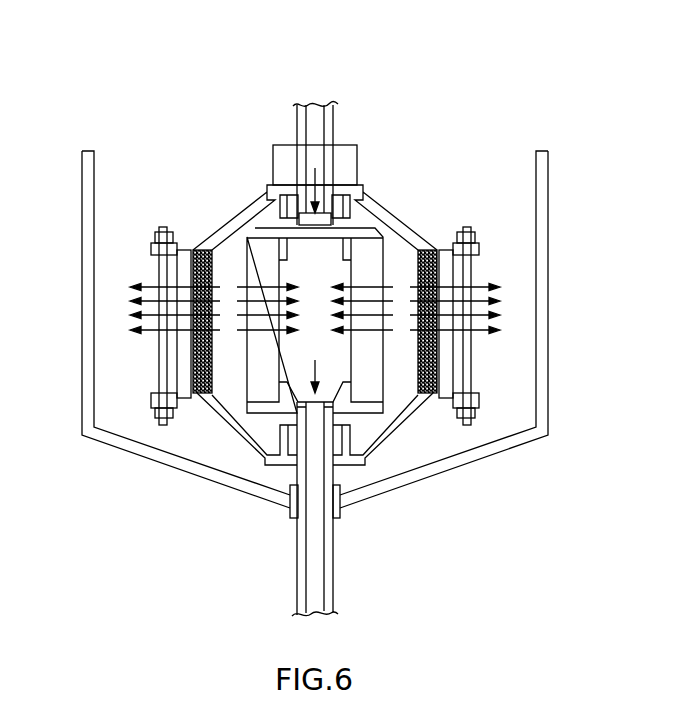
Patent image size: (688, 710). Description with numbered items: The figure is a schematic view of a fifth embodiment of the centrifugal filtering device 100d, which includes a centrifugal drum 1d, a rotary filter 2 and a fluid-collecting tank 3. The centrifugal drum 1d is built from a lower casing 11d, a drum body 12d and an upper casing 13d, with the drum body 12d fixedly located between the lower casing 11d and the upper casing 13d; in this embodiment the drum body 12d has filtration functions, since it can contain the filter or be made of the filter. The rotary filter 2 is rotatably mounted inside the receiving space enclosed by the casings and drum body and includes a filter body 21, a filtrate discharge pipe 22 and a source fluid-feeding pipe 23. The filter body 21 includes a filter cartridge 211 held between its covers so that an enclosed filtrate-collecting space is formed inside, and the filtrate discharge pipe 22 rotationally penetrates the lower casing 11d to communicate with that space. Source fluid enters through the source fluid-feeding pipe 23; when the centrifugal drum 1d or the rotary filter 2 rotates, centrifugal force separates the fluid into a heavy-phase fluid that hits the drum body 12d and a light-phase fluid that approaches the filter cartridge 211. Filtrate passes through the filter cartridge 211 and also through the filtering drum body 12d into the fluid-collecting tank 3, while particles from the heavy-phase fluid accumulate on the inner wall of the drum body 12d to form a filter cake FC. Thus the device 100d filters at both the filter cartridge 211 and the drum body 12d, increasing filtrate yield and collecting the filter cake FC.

The centrifugal filtering device 100d is at (168, 95).
The rotary filter 2 is at (352, 118).
The source fluid-feeding pipe 23 is at (303, 123).
The centrifugal drum 1d is at (220, 204).
The upper casing 13d is at (407, 227).
The fluid-collecting tank 3 is at (543, 185).
The drum body 12d is at (185, 358).
The filter cartridge 211 is at (255, 380).
The filter cake FC is at (430, 358).
The filter body 21 is at (398, 380).
The lower casing 11d is at (227, 430).
The filtrate discharge pipe 22 is at (328, 548).